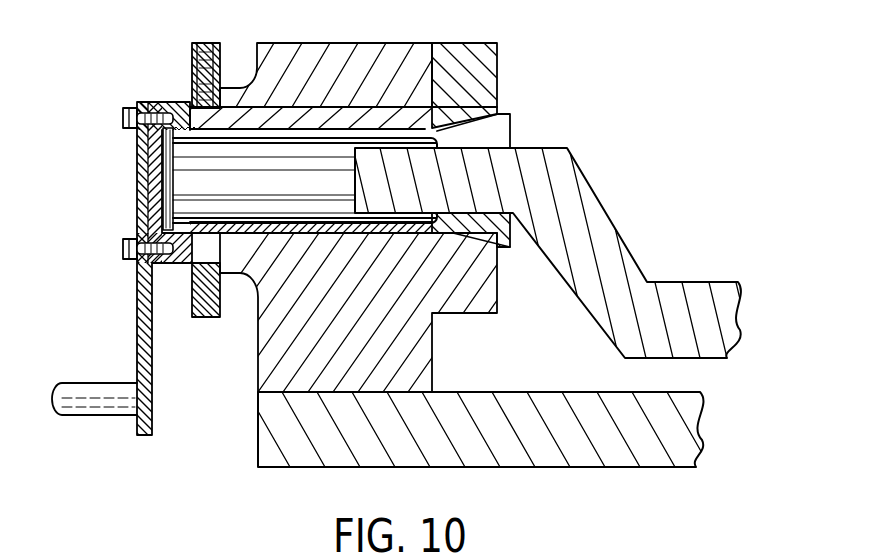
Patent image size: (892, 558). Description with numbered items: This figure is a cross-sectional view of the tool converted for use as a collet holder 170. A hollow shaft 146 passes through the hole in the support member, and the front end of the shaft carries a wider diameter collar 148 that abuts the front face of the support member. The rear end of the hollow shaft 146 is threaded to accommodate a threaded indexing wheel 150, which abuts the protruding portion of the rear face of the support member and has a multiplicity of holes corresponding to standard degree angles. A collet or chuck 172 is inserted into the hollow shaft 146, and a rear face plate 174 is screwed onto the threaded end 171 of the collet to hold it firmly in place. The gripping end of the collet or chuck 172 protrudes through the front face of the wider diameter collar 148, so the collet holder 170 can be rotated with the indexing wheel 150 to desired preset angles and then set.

The hollow shaft 146 is at (390, 118).
The wider diameter collar 148 is at (473, 43).
The indexing wheel 150 is at (192, 67).
The collet holder 170 is at (510, 114).
The threaded end 171 is at (182, 190).
The collet or chuck 172 is at (487, 138).
The rear face plate 174 is at (157, 168).